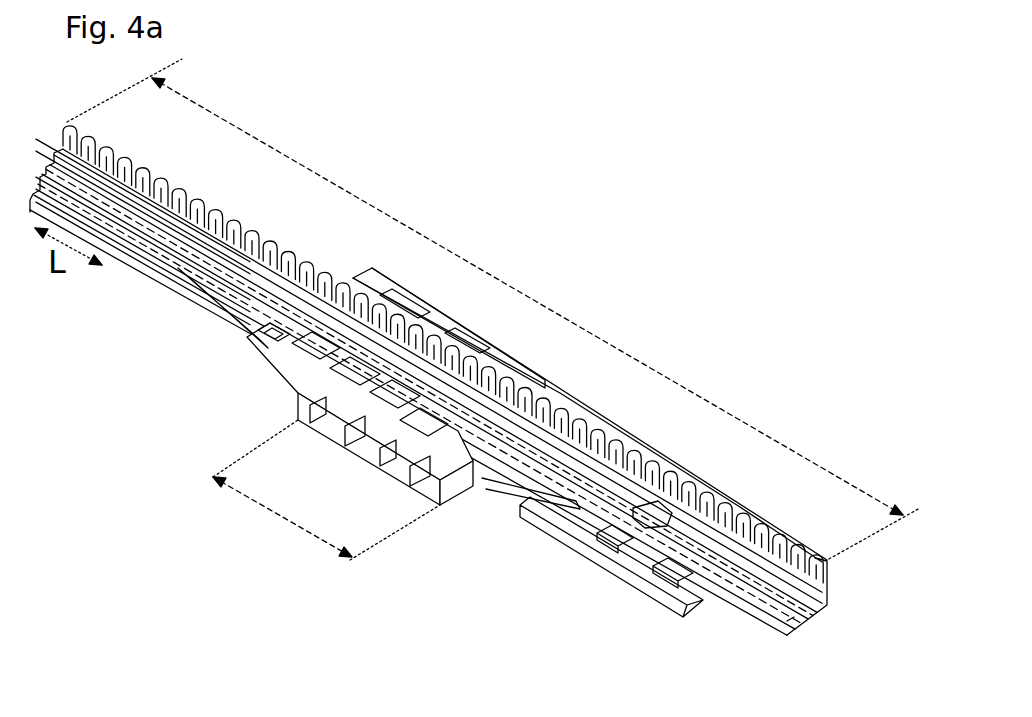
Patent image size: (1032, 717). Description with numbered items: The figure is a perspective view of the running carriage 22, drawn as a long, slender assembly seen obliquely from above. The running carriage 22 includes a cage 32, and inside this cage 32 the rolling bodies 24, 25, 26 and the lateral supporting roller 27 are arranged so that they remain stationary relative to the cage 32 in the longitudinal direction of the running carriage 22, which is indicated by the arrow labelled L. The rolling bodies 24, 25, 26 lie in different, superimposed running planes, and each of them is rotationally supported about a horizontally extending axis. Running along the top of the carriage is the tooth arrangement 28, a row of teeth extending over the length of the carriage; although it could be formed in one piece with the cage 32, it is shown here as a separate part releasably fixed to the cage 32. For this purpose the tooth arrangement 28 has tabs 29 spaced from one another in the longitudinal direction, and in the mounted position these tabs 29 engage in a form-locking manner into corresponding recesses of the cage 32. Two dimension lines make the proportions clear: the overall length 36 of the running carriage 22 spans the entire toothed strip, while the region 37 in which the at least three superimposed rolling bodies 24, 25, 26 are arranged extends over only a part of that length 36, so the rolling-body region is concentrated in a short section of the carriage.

The running carriage 22 is at (167, 285).
The rolling body 24 is at (638, 586).
The rolling body 25 is at (297, 417).
The rolling body 26 is at (455, 336).
The lateral supporting roller 27 is at (361, 459).
The tooth arrangement 28 is at (209, 205).
The tab 29 is at (250, 348).
The cage 32 is at (418, 476).
The length 36 is at (493, 309).
The region 37 is at (326, 491).